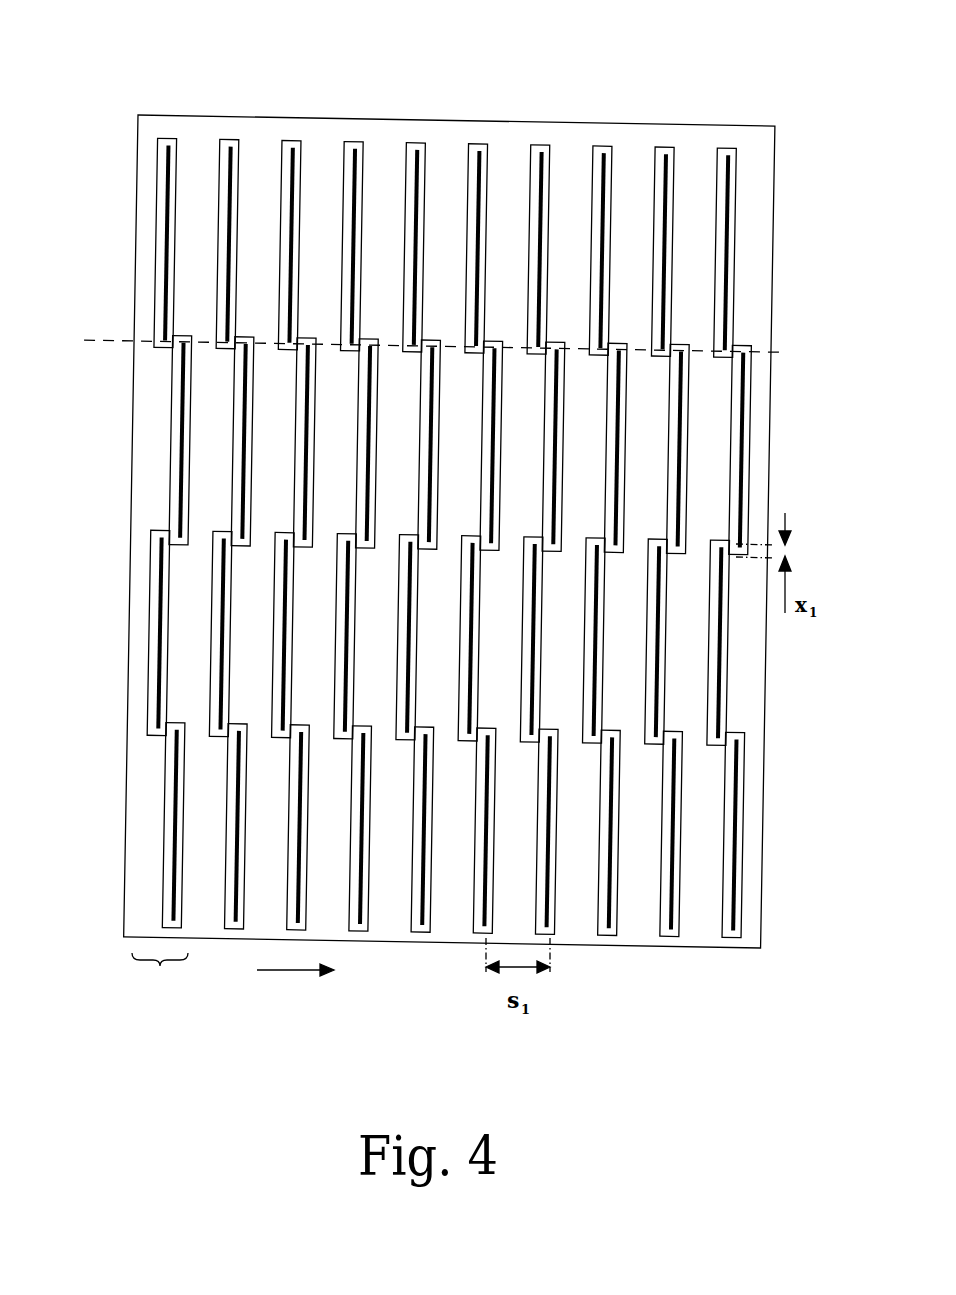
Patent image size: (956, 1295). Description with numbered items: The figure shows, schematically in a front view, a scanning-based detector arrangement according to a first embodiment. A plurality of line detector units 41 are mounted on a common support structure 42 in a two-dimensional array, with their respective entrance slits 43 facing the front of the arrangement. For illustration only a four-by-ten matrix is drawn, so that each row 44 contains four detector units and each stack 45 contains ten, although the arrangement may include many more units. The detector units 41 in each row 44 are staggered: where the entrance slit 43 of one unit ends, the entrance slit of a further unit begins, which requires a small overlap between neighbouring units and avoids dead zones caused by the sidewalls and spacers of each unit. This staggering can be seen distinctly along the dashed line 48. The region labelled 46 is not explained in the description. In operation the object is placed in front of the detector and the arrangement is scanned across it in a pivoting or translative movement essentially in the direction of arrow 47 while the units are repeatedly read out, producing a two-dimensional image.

The line detector unit 41 is at (239, 157).
The common support structure 42 is at (137, 178).
The entrance slit 43 is at (231, 159).
The row 44 is at (160, 978).
The stack 45 is at (108, 723).
The substrate surface 46 is at (635, 925).
The arrow 47 is at (275, 971).
The dashed line 48 is at (785, 356).